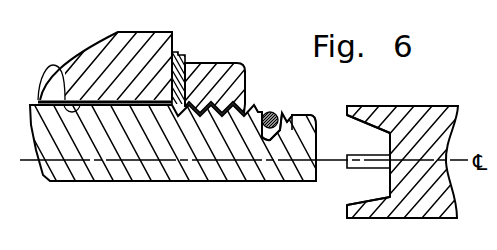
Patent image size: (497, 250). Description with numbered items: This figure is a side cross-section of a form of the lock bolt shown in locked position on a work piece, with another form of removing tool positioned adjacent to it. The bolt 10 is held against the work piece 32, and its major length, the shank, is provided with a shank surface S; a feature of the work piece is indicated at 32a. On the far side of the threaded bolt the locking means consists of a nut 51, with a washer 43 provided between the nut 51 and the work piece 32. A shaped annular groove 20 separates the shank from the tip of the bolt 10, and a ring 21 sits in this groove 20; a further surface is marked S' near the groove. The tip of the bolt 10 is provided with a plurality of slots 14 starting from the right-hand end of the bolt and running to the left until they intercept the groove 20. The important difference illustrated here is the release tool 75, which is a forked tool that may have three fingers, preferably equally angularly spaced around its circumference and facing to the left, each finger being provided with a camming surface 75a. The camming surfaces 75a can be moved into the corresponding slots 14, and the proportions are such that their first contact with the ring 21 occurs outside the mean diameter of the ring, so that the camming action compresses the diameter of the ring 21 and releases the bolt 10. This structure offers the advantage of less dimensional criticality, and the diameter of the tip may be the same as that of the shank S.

The bolt 10 is at (52, 177).
The work piece 32 is at (91, 48).
The lip of cap member 32a is at (63, 67).
The shank surface S is at (91, 87).
The washer 43 is at (176, 52).
The nut 51 is at (217, 63).
The seal S' is at (263, 88).
The ring 21 is at (275, 112).
The annular groove 20 is at (288, 119).
The slots 14 is at (307, 118).
The release tool 75 is at (420, 106).
The camming surface 75a is at (369, 127).